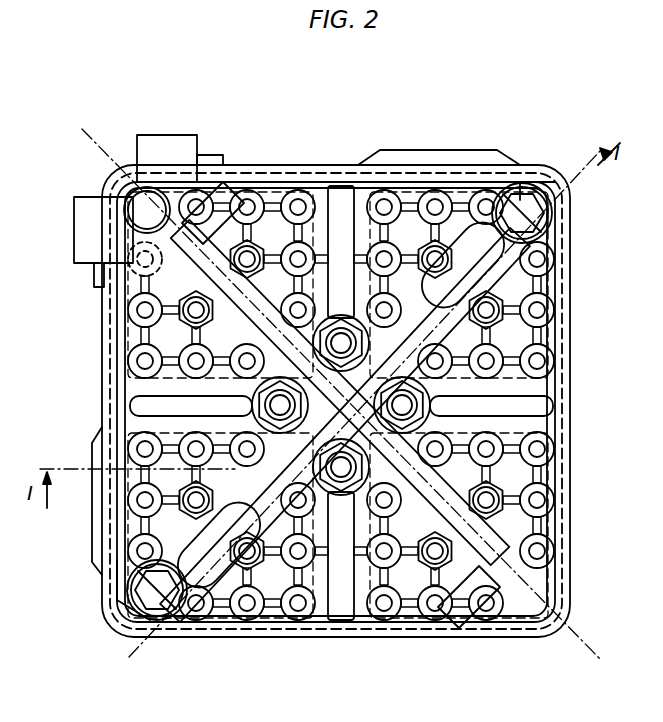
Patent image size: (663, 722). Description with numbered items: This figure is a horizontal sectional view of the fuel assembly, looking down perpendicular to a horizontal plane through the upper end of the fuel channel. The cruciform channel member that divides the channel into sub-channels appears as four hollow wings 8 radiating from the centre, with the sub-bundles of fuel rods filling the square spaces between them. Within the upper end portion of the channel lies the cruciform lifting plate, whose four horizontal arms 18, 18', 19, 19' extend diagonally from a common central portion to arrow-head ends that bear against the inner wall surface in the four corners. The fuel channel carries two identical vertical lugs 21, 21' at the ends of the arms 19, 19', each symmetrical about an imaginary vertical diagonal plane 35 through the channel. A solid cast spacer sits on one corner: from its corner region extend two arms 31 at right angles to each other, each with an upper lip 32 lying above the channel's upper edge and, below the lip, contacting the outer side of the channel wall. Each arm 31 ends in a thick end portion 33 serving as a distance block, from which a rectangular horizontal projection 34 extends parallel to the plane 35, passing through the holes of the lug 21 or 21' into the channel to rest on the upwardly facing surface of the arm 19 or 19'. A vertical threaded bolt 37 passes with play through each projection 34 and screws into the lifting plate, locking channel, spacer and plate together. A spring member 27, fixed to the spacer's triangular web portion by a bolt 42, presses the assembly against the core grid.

The hollow wing 8 is at (565, 380).
The horizontal arm 18 is at (526, 558).
The horizontal arm 18' is at (230, 176).
The horizontal arm 19 is at (219, 591).
The horizontal arm 19' is at (520, 265).
The vertical lug 21 is at (149, 625).
The vertical lug 21' is at (559, 213).
The spring member 27 is at (172, 190).
The arm 31 is at (345, 165).
The upper lip 32 is at (321, 170).
The end portion 33 is at (440, 152).
The horizontal projection 34 is at (497, 172).
The imaginary vertical diagonal plane 35 is at (591, 653).
The threaded bolt 37 is at (525, 210).
The bolt 42 is at (147, 210).